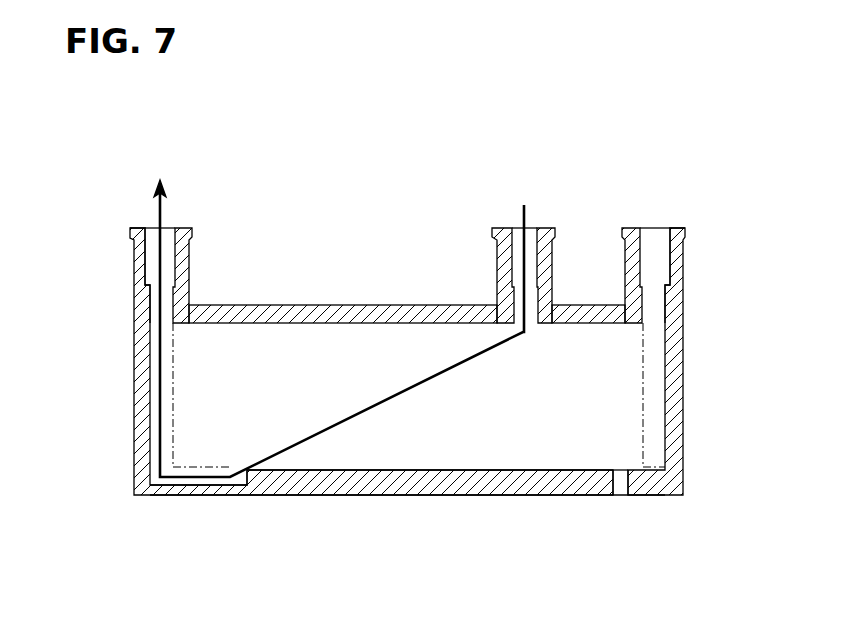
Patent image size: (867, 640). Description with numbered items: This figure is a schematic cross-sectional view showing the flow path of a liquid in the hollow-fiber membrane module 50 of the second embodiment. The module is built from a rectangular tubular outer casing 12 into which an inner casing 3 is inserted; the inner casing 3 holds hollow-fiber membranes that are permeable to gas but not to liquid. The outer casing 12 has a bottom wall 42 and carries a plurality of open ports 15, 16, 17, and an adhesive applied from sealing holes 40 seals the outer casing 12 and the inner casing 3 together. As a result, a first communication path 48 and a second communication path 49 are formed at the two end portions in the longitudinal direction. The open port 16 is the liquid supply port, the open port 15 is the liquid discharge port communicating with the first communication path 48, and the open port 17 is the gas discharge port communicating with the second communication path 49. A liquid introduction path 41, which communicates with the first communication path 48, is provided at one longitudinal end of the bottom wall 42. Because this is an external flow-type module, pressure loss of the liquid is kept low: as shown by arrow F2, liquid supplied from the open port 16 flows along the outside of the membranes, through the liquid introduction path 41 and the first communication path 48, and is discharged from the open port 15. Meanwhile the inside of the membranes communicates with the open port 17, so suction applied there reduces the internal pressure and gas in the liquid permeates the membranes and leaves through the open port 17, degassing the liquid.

The hollow-fiber membrane module 50 is at (722, 184).
The outer casing 12 is at (703, 276).
The open port 15 is at (190, 261).
The open port 16 is at (497, 272).
The open port 17 is at (625, 258).
The sealing hole 40 is at (200, 305).
The liquid introduction path 41 is at (250, 481).
The bottom wall 42 is at (508, 496).
The first communication path 48 is at (153, 354).
The second communication path 49 is at (653, 363).
The inner casing 3 is at (162, 437).
The arrow F2 is at (377, 407).